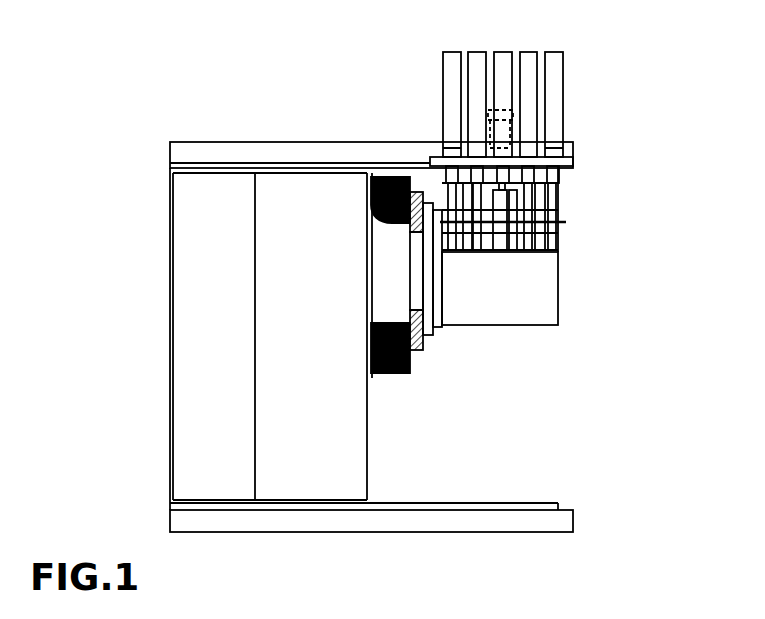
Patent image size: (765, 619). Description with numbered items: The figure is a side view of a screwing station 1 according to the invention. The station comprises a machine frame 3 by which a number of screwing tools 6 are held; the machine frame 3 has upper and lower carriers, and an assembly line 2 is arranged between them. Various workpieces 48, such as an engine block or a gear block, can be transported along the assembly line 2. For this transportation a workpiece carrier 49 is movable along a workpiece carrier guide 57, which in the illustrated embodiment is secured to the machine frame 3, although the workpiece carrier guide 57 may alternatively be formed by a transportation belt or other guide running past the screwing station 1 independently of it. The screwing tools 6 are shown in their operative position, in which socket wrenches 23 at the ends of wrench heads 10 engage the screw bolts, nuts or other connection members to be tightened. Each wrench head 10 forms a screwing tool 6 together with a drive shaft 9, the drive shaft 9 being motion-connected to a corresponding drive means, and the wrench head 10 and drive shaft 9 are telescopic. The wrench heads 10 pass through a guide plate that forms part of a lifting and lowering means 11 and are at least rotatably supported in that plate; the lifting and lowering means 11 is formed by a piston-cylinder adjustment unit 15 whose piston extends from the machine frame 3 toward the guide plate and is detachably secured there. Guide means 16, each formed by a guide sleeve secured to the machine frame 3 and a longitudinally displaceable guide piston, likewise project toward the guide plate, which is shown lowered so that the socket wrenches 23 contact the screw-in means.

The screwing station 1 is at (169, 121).
The assembly line 2 is at (572, 316).
The machine frame 3 is at (195, 324).
The screwing tool 6 is at (568, 203).
The drive shaft 9 is at (557, 192).
The wrench head 10 is at (560, 233).
The lifting and lowering means 11 is at (562, 222).
The piston-cylinder adjustment unit 15 is at (515, 120).
The guide means 16 is at (548, 148).
The socket wrench 23 is at (560, 248).
The workpiece 48 is at (526, 313).
The workpiece carrier 49 is at (410, 352).
The workpiece carrier guide 57 is at (391, 380).